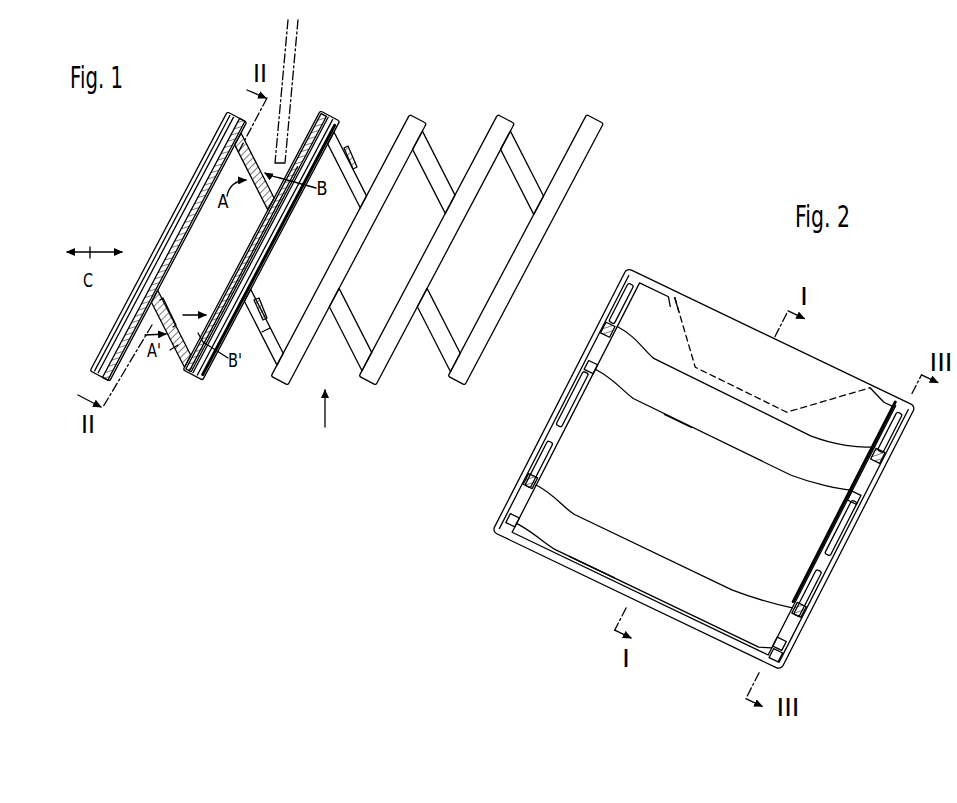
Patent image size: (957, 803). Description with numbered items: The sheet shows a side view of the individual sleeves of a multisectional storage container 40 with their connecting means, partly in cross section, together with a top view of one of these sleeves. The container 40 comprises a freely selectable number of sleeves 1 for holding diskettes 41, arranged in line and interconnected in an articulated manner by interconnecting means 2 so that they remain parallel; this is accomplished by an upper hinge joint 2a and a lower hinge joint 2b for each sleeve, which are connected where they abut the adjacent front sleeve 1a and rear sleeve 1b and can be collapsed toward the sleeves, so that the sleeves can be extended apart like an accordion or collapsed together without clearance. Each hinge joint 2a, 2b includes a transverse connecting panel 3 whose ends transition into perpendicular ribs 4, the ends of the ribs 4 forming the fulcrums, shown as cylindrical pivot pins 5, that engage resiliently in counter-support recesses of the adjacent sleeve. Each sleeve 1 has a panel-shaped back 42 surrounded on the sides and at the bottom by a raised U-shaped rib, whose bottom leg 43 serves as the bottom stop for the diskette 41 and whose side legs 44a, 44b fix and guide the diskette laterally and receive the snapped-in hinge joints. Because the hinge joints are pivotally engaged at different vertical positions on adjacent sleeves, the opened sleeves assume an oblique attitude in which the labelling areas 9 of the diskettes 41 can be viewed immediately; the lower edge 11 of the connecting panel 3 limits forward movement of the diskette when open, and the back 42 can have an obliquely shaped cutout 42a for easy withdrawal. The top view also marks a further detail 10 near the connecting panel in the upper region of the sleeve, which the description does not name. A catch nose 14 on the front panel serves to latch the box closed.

In FIG. 1, the sleeve 1 is at (356, 242).
In FIG. 1, the front sleeve 1a is at (200, 166).
In FIG. 1, the rear sleeve 1b is at (279, 237).
In FIG. 1, the interconnecting means 2 is at (429, 189).
In FIG. 1, the upper hinge joint 2a is at (248, 189).
In FIG. 2, the upper hinge joint 2a is at (753, 459).
In FIG. 1, the lower hinge joint 2b is at (179, 312).
In FIG. 2, the lower hinge joint 2b is at (709, 573).
In FIG. 1, the transverse connecting panel 3 is at (186, 352).
In FIG. 2, the transverse connecting panel 3 is at (723, 427).
In FIG. 1, the rib 4 is at (172, 360).
In FIG. 2, the rib 4 is at (790, 628).
In FIG. 2, the pivot pin 5 is at (780, 657).
In FIG. 1, the labelling area 9 is at (305, 142).
In FIG. 2, the labelling area 9 is at (762, 372).
In FIG. 2, the stop 10 is at (811, 425).
In FIG. 2, the lower edge 11 is at (675, 421).
In FIG. 1, the catch nose 14 is at (164, 222).
In FIG. 1, the multisectional storage container 40 is at (327, 422).
In FIG. 1, the diskette 41 is at (298, 32).
In FIG. 2, the diskette 41 is at (698, 320).
In FIG. 1, the panel-shaped back 42 is at (261, 260).
In FIG. 2, the panel-shaped back 42 is at (703, 469).
In FIG. 2, the cutout 42a is at (691, 342).
In FIG. 2, the bottom leg 43 is at (603, 583).
In FIG. 2, the side leg 44a is at (550, 435).
In FIG. 2, the side leg 44b is at (820, 568).